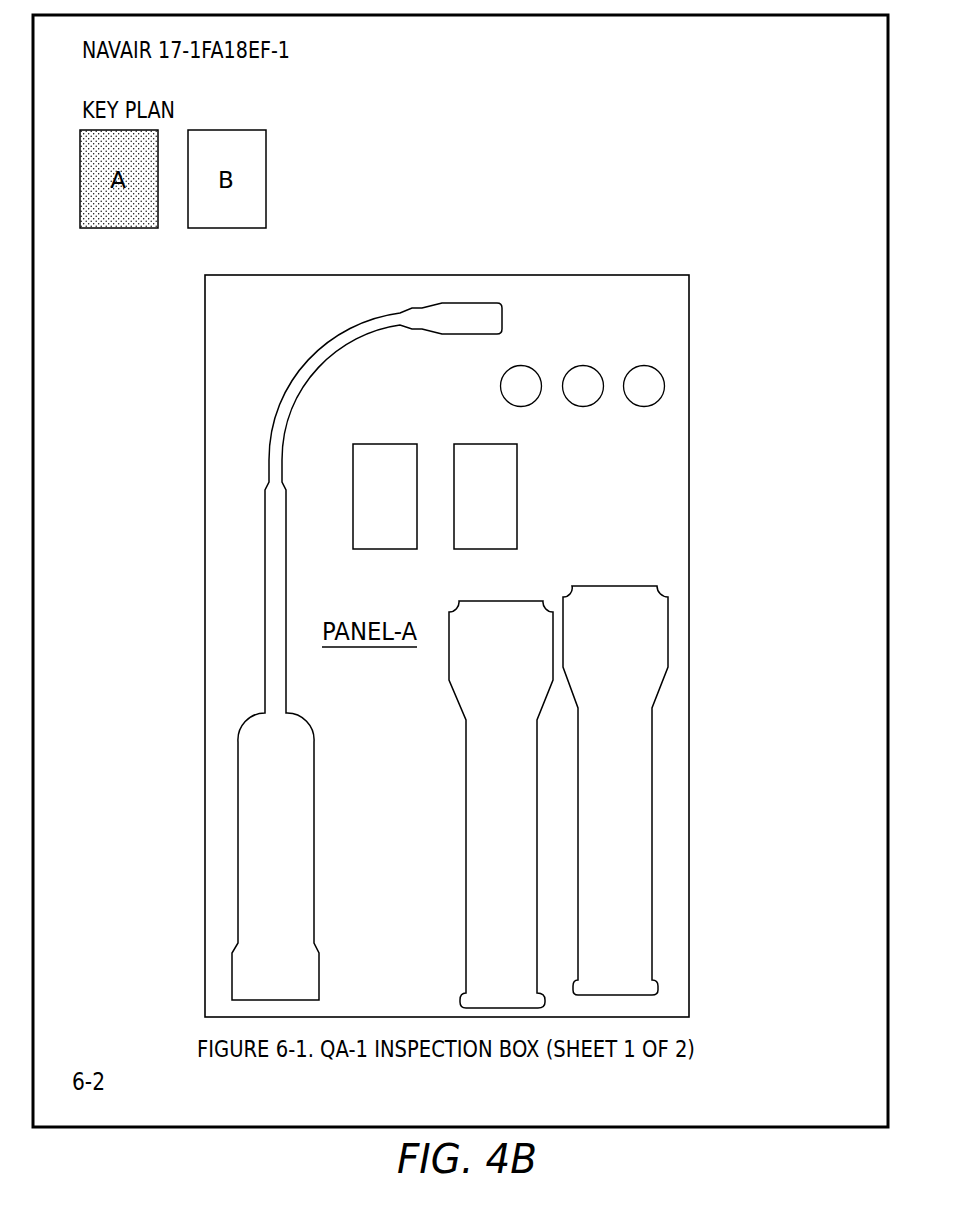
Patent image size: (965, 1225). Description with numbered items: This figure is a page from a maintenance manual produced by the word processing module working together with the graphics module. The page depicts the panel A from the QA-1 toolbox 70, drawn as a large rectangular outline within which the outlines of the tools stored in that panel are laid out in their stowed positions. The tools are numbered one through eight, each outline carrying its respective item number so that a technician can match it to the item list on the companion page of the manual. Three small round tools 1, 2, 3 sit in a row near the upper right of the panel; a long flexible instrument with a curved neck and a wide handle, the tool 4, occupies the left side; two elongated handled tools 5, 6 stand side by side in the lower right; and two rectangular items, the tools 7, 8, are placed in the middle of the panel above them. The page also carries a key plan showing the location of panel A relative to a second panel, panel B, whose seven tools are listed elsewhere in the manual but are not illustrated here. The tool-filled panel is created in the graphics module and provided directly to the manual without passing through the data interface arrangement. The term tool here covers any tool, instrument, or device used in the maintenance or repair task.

The panel A from the QA-1 toolbox 70 is at (690, 488).
The tool 1 is at (521, 402).
The tool 2 is at (583, 402).
The tool 3 is at (644, 402).
The tool 4 is at (367, 651).
The tool 5 is at (501, 804).
The tool 6 is at (615, 790).
The tool 7 is at (385, 496).
The tool 8 is at (485, 496).